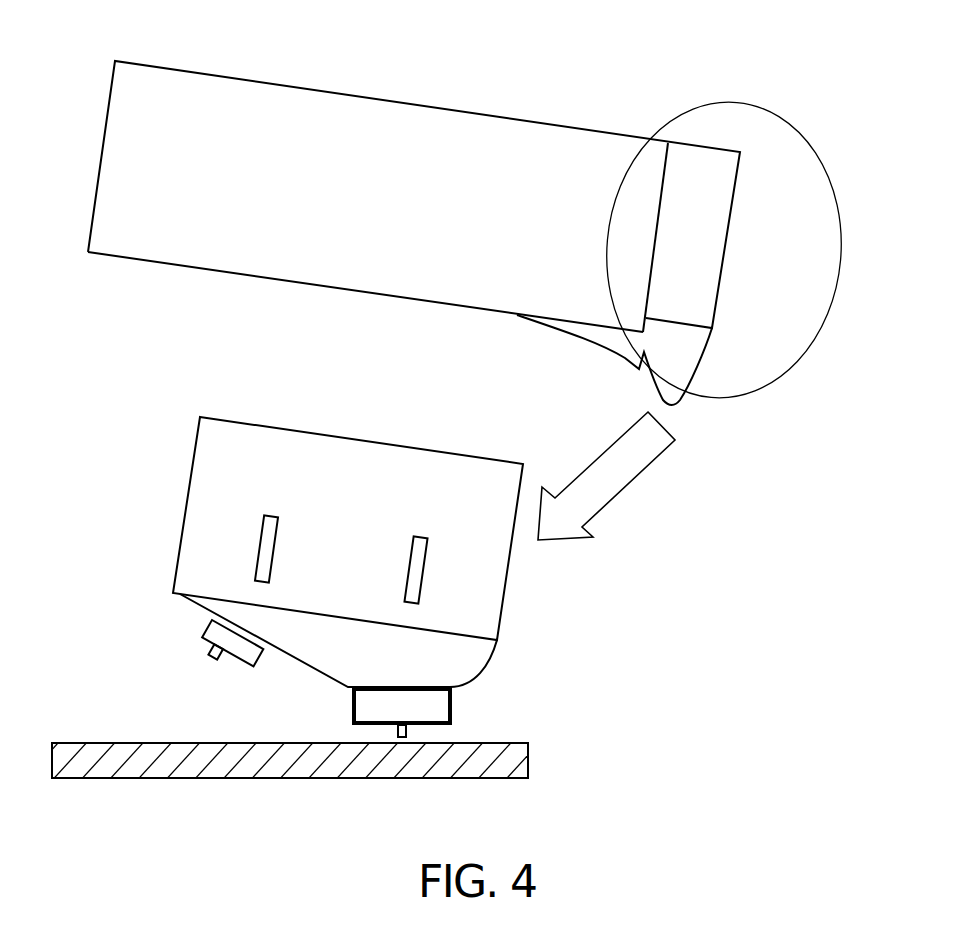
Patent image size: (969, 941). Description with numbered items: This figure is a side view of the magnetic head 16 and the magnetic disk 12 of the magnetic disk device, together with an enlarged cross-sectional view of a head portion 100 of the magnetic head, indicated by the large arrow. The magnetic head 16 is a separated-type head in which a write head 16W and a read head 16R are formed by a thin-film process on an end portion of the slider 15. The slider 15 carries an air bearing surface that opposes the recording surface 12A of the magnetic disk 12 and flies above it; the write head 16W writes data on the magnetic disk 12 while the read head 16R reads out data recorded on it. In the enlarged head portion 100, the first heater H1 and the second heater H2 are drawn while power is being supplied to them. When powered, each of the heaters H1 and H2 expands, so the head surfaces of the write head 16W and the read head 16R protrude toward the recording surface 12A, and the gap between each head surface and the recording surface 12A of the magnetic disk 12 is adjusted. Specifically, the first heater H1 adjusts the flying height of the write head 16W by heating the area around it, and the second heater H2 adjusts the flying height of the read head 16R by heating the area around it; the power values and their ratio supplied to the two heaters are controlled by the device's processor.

The magnetic head 16 is at (468, 77).
The slider 15 is at (320, 286).
The head portion 100 is at (805, 138).
The first heater H1 is at (427, 555).
The second heater H2 is at (277, 530).
The read head 16R is at (217, 668).
The write head 16W is at (452, 703).
The magnetic disk 12 is at (530, 760).
The recording surface 12A is at (270, 748).